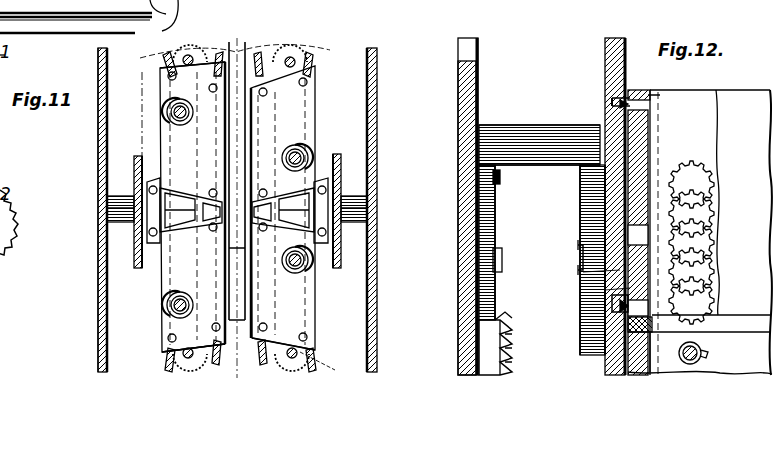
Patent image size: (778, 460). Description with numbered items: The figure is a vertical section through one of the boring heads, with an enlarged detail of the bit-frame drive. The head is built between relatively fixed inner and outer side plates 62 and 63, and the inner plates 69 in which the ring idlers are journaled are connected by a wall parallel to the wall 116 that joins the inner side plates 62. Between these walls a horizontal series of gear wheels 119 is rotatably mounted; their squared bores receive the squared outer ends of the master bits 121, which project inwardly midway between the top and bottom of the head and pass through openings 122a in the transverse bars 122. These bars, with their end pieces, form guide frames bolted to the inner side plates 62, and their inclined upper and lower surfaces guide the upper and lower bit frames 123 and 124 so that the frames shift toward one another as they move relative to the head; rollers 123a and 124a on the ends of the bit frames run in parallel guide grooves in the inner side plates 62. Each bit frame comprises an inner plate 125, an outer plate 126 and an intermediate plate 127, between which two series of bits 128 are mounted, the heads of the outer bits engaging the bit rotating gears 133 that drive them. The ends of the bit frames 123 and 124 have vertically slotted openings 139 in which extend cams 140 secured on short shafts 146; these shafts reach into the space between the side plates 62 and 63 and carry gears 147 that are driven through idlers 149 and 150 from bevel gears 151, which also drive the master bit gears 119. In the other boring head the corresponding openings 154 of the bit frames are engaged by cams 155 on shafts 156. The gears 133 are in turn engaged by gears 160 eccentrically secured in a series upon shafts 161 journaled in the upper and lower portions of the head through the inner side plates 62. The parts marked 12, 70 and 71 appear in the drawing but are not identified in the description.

In FIG. 11, the shaft / frame member 12 is at (304, 66).
In FIG. 12, the inner side plate 62 is at (612, 38).
In FIG. 12, the outer side plate 63 is at (458, 99).
In FIG. 11, the inner plate 69 is at (100, 160).
In FIG. 11, the frame member 70 is at (184, 11).
In FIG. 11, the frame member 71 is at (176, 18).
In FIG. 11, the wall 116 is at (112, 264).
In FIG. 11, the master bit gears 119 is at (110, 201).
In FIG. 11, the master bits 121 is at (134, 190).
In FIG. 11, the transverse bars 122 is at (108, 221).
In FIG. 12, the transverse bars 122 is at (756, 324).
In FIG. 12, the openings 122a is at (713, 358).
In FIG. 11, the upper bit frame 123 is at (318, 86).
In FIG. 12, the upper bit frame 123 is at (604, 314).
In FIG. 11, the rollers 123a is at (165, 72).
In FIG. 12, the rollers 123a is at (646, 93).
In FIG. 11, the lower bit frame 124 is at (300, 320).
In FIG. 11, the rollers 124a is at (168, 352).
In FIG. 11, the inner plate 125 is at (215, 148).
In FIG. 11, the outer plate 126 is at (215, 176).
In FIG. 11, the intermediate plate 127 is at (215, 163).
In FIG. 12, the bits 128 is at (700, 232).
In FIG. 11, the bit rotating gears 133 is at (322, 370).
In FIG. 11, the vertically slotted openings 139 is at (308, 150).
In FIG. 12, the vertically slotted openings 139 is at (630, 224).
In FIG. 11, the cams 140 is at (306, 158).
In FIG. 12, the cams 140 is at (583, 273).
In FIG. 11, the short shafts 146 is at (300, 161).
In FIG. 12, the short shafts 146 is at (578, 249).
In FIG. 12, the gears 147 is at (580, 205).
In FIG. 12, the idler 149 is at (530, 118).
In FIG. 12, the idler 150 is at (496, 180).
In FIG. 12, the bevel gears 151 is at (498, 318).
In FIG. 11, the openings 154 is at (174, 100).
In FIG. 11, the cams 155 is at (167, 109).
In FIG. 11, the shafts 156 is at (174, 115).
In FIG. 11, the gears 160 is at (118, 8).
In FIG. 11, the shafts 161 is at (298, 30).